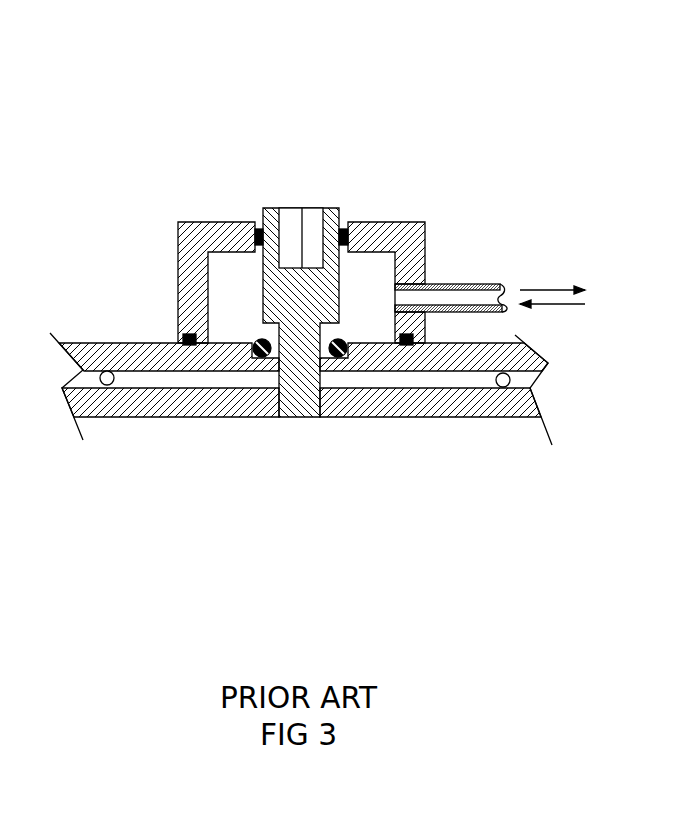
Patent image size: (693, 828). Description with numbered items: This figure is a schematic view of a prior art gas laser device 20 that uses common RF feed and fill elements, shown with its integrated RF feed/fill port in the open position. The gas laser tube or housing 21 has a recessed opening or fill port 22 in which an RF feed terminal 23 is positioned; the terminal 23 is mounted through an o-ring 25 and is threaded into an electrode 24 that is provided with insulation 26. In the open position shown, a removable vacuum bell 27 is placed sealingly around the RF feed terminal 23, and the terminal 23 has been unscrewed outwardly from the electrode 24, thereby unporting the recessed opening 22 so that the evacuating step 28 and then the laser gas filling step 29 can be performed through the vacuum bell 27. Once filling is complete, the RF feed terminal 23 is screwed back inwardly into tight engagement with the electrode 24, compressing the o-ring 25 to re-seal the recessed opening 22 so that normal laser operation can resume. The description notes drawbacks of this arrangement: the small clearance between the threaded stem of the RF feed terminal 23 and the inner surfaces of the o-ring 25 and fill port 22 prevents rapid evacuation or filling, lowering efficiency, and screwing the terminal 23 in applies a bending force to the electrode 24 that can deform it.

The prior art device 20 is at (383, 203).
The gas laser tube or housing 21 is at (140, 355).
The recessed opening or fill port 22 is at (328, 375).
The RF feed terminal 23 is at (295, 232).
The electrode 24 is at (185, 405).
The o-ring 25 is at (262, 345).
The insulation 26 is at (107, 372).
The removable vacuum bell 27 is at (200, 235).
The evacuating step 28 is at (560, 300).
The laser gas filling step 29 is at (560, 300).